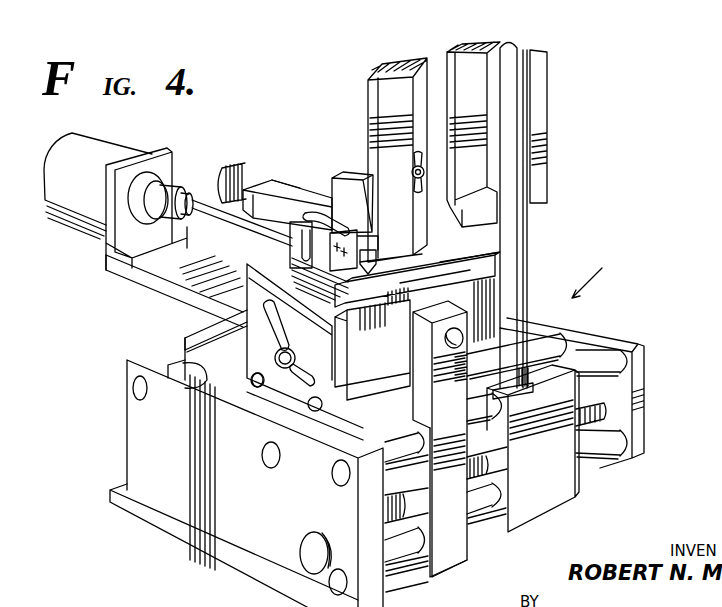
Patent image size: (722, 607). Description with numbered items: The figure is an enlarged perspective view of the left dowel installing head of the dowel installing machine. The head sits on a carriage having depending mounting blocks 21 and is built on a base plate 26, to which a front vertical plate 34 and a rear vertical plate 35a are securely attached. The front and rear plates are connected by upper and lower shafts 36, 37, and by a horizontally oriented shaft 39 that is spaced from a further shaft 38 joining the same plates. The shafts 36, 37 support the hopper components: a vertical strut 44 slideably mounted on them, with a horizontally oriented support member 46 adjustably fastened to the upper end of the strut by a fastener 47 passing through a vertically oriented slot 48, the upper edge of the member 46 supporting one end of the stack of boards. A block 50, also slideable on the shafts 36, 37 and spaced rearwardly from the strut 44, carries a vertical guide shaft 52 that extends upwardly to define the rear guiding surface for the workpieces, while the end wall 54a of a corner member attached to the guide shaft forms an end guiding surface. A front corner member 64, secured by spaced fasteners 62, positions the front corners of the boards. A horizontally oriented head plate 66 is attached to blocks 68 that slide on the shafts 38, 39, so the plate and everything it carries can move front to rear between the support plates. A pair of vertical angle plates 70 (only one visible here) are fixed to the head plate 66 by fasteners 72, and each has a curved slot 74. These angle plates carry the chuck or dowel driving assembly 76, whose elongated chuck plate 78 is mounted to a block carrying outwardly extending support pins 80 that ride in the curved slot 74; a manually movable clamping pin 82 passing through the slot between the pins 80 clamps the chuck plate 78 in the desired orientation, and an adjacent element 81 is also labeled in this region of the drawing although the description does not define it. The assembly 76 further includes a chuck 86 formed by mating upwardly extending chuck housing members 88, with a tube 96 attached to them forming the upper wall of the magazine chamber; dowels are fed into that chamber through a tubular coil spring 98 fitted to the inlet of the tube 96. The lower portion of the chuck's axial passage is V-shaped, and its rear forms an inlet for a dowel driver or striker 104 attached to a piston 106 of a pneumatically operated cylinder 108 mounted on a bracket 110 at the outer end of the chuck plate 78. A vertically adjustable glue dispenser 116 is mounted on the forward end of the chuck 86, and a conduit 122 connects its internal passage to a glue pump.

The mounting block 21 is at (595, 282).
The base plate 26 is at (230, 567).
The front vertical plate 34 is at (168, 516).
The rear vertical plate 35a is at (648, 398).
The upper shaft 36 is at (618, 358).
The lower shaft 37 is at (605, 456).
The shaft 38 is at (182, 366).
The horizontally oriented shaft 39 is at (262, 456).
The vertical strut 44 is at (455, 563).
The horizontally oriented member 46 is at (485, 259).
The fastener 47 is at (450, 345).
The vertically oriented slot 48 is at (437, 289).
The block 50 is at (562, 498).
The vertical guide shaft 52 is at (548, 78).
The end wall 54a is at (472, 42).
The fastener 62 is at (412, 172).
The front corner member 64 is at (368, 78).
The head plate 66 is at (183, 335).
The block 68 is at (182, 395).
The vertical angle plate 70 is at (240, 314).
The fastener 72 is at (254, 390).
The curved slot 74 is at (280, 332).
The dowel driving assembly 76 is at (277, 172).
The chuck plate 78 is at (155, 268).
The support pin 80 is at (322, 376).
The bar 81 is at (425, 280).
The clamping pin 82 is at (248, 342).
The chuck 86 is at (286, 262).
The chuck housing member 88 is at (352, 176).
The tube 96 is at (305, 195).
The tubular coil spring 98 is at (238, 170).
The dowel driver 104 is at (240, 236).
The piston 106 is at (160, 185).
The pneumatically operated cylinder 108 is at (98, 112).
The bracket 110 is at (106, 236).
The glue dispenser 116 is at (360, 228).
The conduit 122 is at (306, 216).